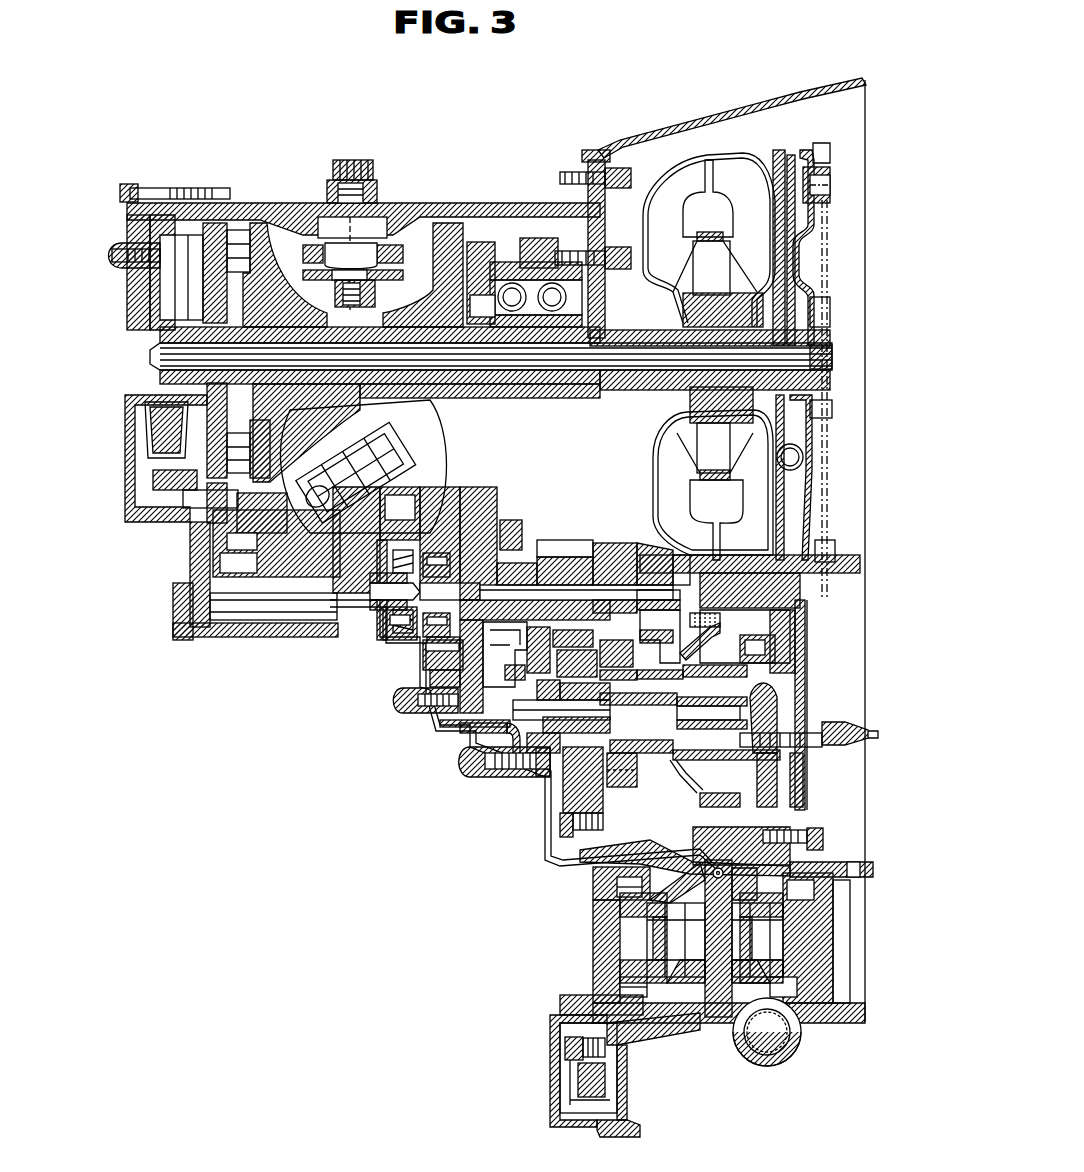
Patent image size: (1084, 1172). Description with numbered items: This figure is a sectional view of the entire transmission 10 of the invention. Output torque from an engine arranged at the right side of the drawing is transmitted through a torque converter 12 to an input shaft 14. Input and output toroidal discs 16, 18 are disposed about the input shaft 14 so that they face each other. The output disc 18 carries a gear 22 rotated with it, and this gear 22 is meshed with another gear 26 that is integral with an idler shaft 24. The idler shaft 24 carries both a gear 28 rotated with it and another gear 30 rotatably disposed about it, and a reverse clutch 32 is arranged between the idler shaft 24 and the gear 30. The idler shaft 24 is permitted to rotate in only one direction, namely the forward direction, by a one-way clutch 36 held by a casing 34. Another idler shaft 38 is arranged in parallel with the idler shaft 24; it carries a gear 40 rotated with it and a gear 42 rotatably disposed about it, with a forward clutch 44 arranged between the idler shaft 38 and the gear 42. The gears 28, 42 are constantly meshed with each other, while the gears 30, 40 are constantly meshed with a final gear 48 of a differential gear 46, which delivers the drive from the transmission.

The transmission 10 is at (654, 90).
The torque converter 12 is at (722, 152).
The input shaft 14 is at (558, 500).
The input toroidal disc 16 is at (262, 223).
The output toroidal disc 18 is at (449, 223).
The gear 22 is at (515, 262).
The idler shaft 24 is at (605, 558).
The gear 26 is at (495, 490).
The gear 28 is at (620, 545).
The gear 30 is at (560, 555).
The reverse clutch 32 is at (523, 524).
The casing 34 is at (445, 728).
The one-way clutch 36 is at (433, 540).
The idler shaft 38 is at (720, 690).
The gear 40 is at (563, 760).
The gear 42 is at (632, 790).
The forward clutch 44 is at (785, 630).
The differential gear 46 is at (703, 1020).
The final gear 48 is at (555, 1110).